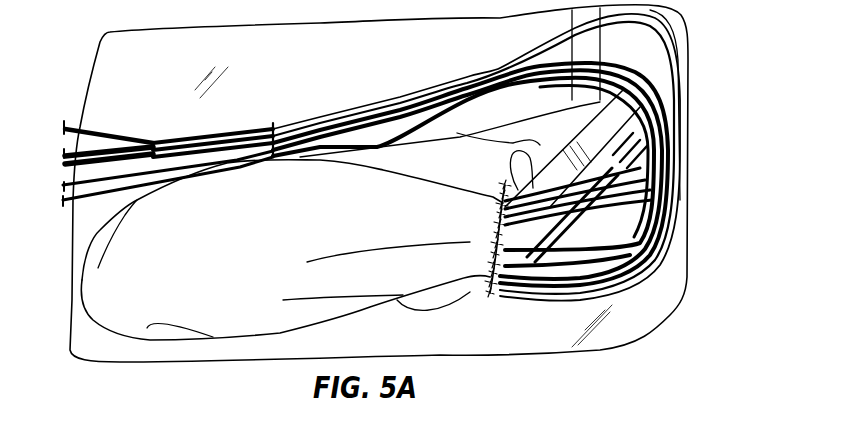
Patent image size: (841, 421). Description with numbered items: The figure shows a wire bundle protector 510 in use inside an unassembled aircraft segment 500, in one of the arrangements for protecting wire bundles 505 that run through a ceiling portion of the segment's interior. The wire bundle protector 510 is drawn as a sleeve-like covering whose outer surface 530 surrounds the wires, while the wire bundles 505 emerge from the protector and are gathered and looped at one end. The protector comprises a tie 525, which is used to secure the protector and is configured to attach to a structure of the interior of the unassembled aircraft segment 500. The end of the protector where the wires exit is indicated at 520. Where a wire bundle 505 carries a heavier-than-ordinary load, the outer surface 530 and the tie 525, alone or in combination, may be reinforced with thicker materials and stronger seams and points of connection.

The unassembled aircraft segment 500 is at (660, 287).
The wire bundle 505 is at (677, 160).
The wire bundle protector 510 is at (275, 258).
The gathered cuff 520 is at (492, 293).
The tie 525 is at (673, 130).
The outer surface 530 is at (127, 278).